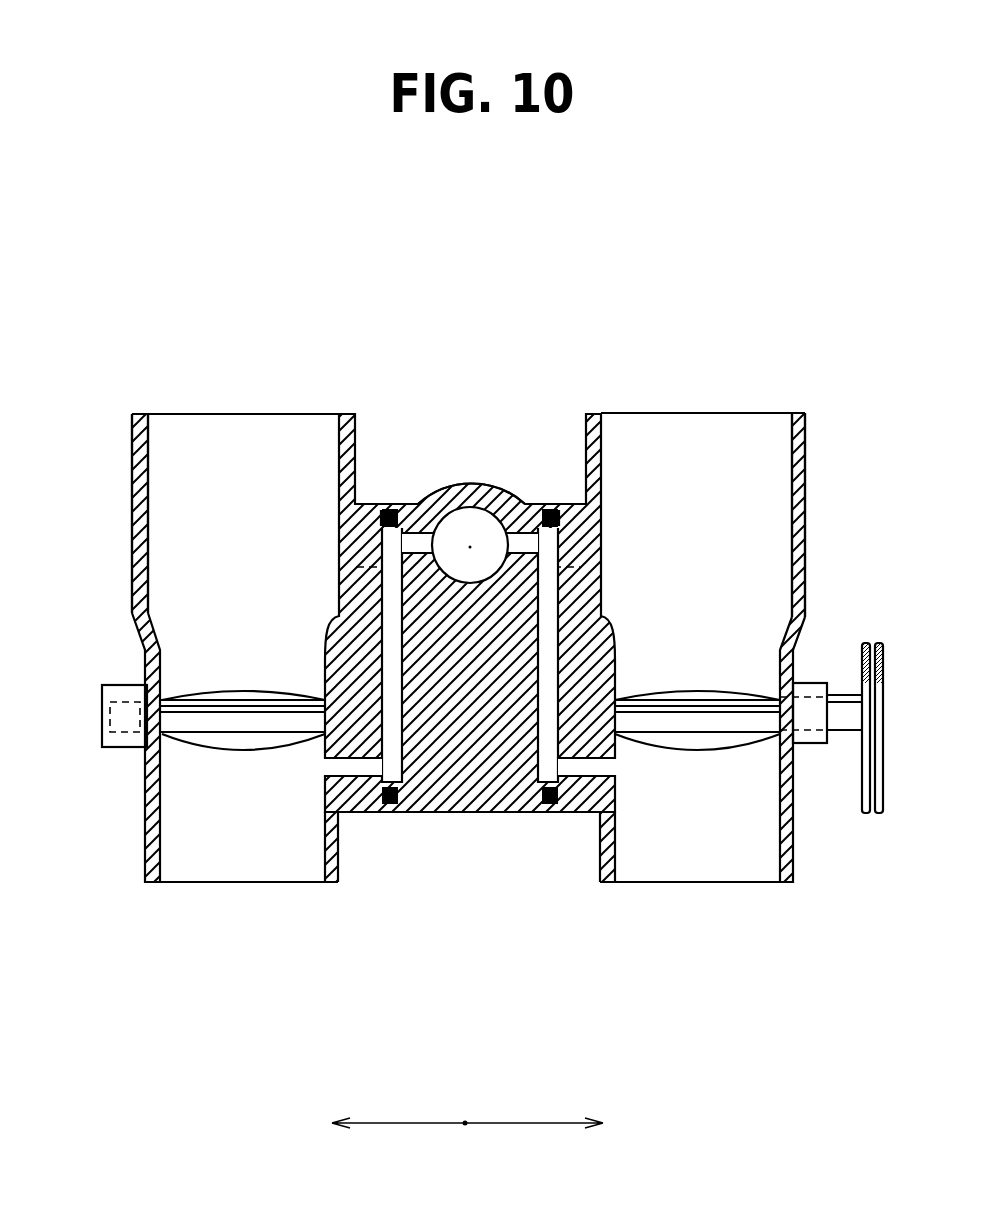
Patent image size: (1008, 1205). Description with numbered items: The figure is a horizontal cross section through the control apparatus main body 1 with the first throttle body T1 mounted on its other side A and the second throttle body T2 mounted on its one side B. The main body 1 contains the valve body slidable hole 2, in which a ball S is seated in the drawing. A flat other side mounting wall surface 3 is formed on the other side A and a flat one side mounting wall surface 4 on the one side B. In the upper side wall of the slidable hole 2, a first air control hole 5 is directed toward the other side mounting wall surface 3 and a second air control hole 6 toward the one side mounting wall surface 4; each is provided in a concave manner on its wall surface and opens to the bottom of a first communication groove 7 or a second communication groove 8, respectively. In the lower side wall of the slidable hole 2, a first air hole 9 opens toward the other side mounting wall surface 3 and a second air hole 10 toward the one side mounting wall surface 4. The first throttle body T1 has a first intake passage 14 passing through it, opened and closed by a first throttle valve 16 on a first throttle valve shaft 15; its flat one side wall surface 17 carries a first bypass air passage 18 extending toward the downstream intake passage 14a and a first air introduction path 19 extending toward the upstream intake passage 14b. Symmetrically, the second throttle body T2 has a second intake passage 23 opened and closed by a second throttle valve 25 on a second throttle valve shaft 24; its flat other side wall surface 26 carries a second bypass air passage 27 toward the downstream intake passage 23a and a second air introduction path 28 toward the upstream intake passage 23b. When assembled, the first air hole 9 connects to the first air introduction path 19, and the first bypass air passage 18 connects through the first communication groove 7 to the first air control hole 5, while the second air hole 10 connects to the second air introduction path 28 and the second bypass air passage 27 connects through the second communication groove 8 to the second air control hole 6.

The control apparatus main body 1 is at (477, 813).
The valve body slidable hole 2 is at (463, 487).
The other side mounting wall surface 3 is at (387, 810).
The one side mounting wall surface 4 is at (547, 812).
The first air control hole 5 is at (405, 507).
The second air control hole 6 is at (523, 507).
The first communication groove 7 is at (338, 617).
The second communication groove 8 is at (600, 614).
The first air hole 9 is at (427, 503).
The second air hole 10 is at (540, 503).
The first intake passage 14 is at (235, 677).
The intake passage at downstream side of first throttle valve 14a is at (228, 963).
The intake passage at upstream side of first throttle valve 14b is at (247, 463).
The first throttle valve shaft 15 is at (200, 725).
The first throttle valve 16 is at (246, 752).
The one side wall surface 17 is at (367, 813).
The first bypass air passage 18 is at (328, 768).
The first air introduction path 19 is at (380, 527).
The second intake passage 23 is at (709, 655).
The intake passage at downstream side of second throttle valve 23a is at (738, 938).
The intake passage at upstream side of second throttle valve 23b is at (720, 445).
The second throttle valve shaft 24 is at (665, 722).
The second throttle valve 25 is at (715, 753).
The other side wall surface 26 is at (567, 813).
The second bypass air passage 27 is at (605, 765).
The second air introduction path 28 is at (560, 520).
The ball S is at (482, 480).
The first throttle body T1 is at (132, 538).
The second throttle body T2 is at (805, 505).
The other side A is at (379, 1127).
The one side B is at (555, 1124).